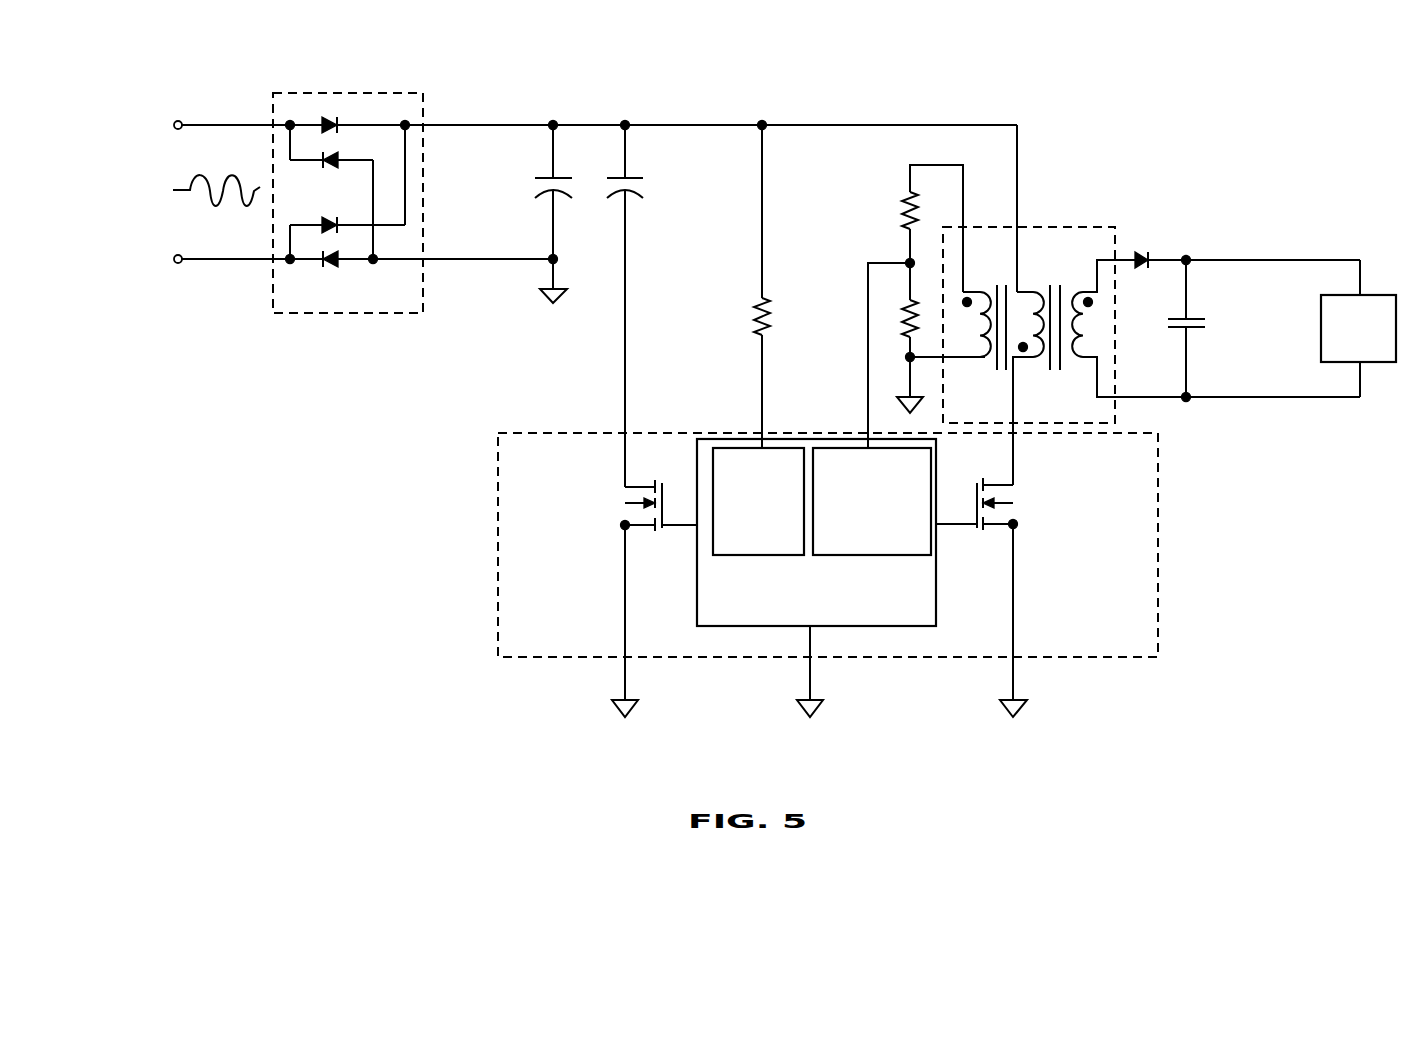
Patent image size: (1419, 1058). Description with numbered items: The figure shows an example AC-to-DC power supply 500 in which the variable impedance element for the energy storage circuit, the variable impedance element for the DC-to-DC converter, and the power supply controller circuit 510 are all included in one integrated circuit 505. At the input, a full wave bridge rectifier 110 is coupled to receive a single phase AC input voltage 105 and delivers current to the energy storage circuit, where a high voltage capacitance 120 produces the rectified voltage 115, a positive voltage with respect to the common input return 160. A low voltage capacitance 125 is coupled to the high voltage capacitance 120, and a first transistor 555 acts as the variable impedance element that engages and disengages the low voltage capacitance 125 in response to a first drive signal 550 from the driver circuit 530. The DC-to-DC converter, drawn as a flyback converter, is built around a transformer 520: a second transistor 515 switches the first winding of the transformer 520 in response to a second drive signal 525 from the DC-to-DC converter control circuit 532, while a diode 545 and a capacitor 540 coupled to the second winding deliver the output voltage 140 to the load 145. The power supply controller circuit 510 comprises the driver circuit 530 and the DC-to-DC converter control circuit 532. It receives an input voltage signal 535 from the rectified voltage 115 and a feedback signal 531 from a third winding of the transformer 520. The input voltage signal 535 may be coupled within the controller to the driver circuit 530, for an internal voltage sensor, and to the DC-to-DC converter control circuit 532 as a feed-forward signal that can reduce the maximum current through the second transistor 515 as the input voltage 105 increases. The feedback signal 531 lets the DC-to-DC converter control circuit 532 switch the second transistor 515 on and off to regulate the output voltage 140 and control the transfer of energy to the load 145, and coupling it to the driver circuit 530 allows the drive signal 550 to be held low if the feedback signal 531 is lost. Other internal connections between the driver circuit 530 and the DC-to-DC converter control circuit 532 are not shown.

The AC input voltage 105 is at (152, 180).
The bridge rectifier 110 is at (273, 92).
The rectified voltage 115 is at (900, 85).
The high voltage capacitance 120 is at (537, 173).
The low voltage capacitance 125 is at (648, 174).
The output voltage 140 is at (1237, 317).
The load 145 is at (1342, 349).
The common input return 160 is at (541, 301).
The AC-to-DC power supply 500 is at (304, 475).
The integrated circuit 505 is at (499, 433).
The power supply controller circuit 510 is at (799, 622).
The transistor Q2 515 is at (1033, 508).
The transformer 520 is at (1075, 226).
The drive signal 525 is at (968, 515).
The driver circuit 530 is at (741, 535).
The feedback signal 531 is at (875, 253).
The DC-to-DC converter control circuit 532 is at (855, 552).
The input voltage signal 535 is at (757, 392).
The capacitor 540 is at (1178, 333).
The diode 545 is at (1140, 243).
The drive signal 550 is at (680, 523).
The transistor Q1 555 is at (612, 497).